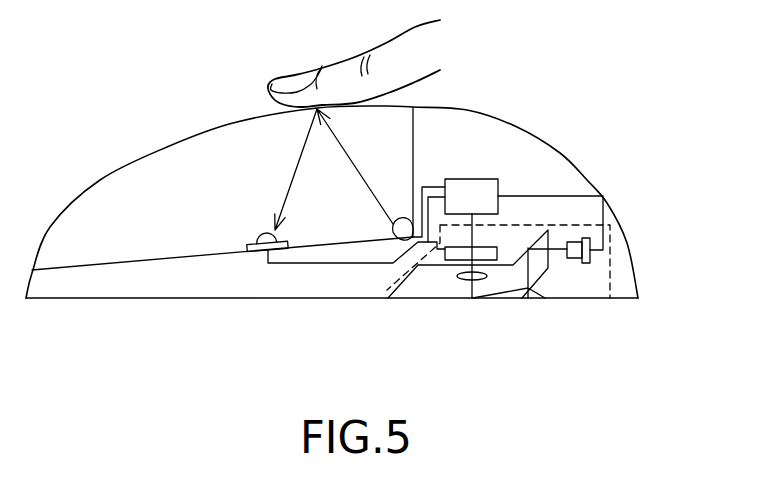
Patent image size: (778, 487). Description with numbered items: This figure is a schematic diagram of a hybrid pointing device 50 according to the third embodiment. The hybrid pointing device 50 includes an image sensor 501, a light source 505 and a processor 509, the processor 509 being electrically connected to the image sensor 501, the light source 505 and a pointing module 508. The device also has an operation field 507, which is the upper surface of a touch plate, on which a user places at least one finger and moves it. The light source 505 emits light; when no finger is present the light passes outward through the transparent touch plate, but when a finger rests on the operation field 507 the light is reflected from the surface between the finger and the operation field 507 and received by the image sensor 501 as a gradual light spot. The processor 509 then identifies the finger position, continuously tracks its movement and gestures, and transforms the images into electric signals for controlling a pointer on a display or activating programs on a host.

The hybrid pointing device 50 is at (661, 50).
The image sensor 501 is at (255, 244).
The light source 505 is at (393, 229).
The operation field 507 is at (197, 132).
The pointing module 508 is at (612, 263).
The processor 509 is at (482, 179).